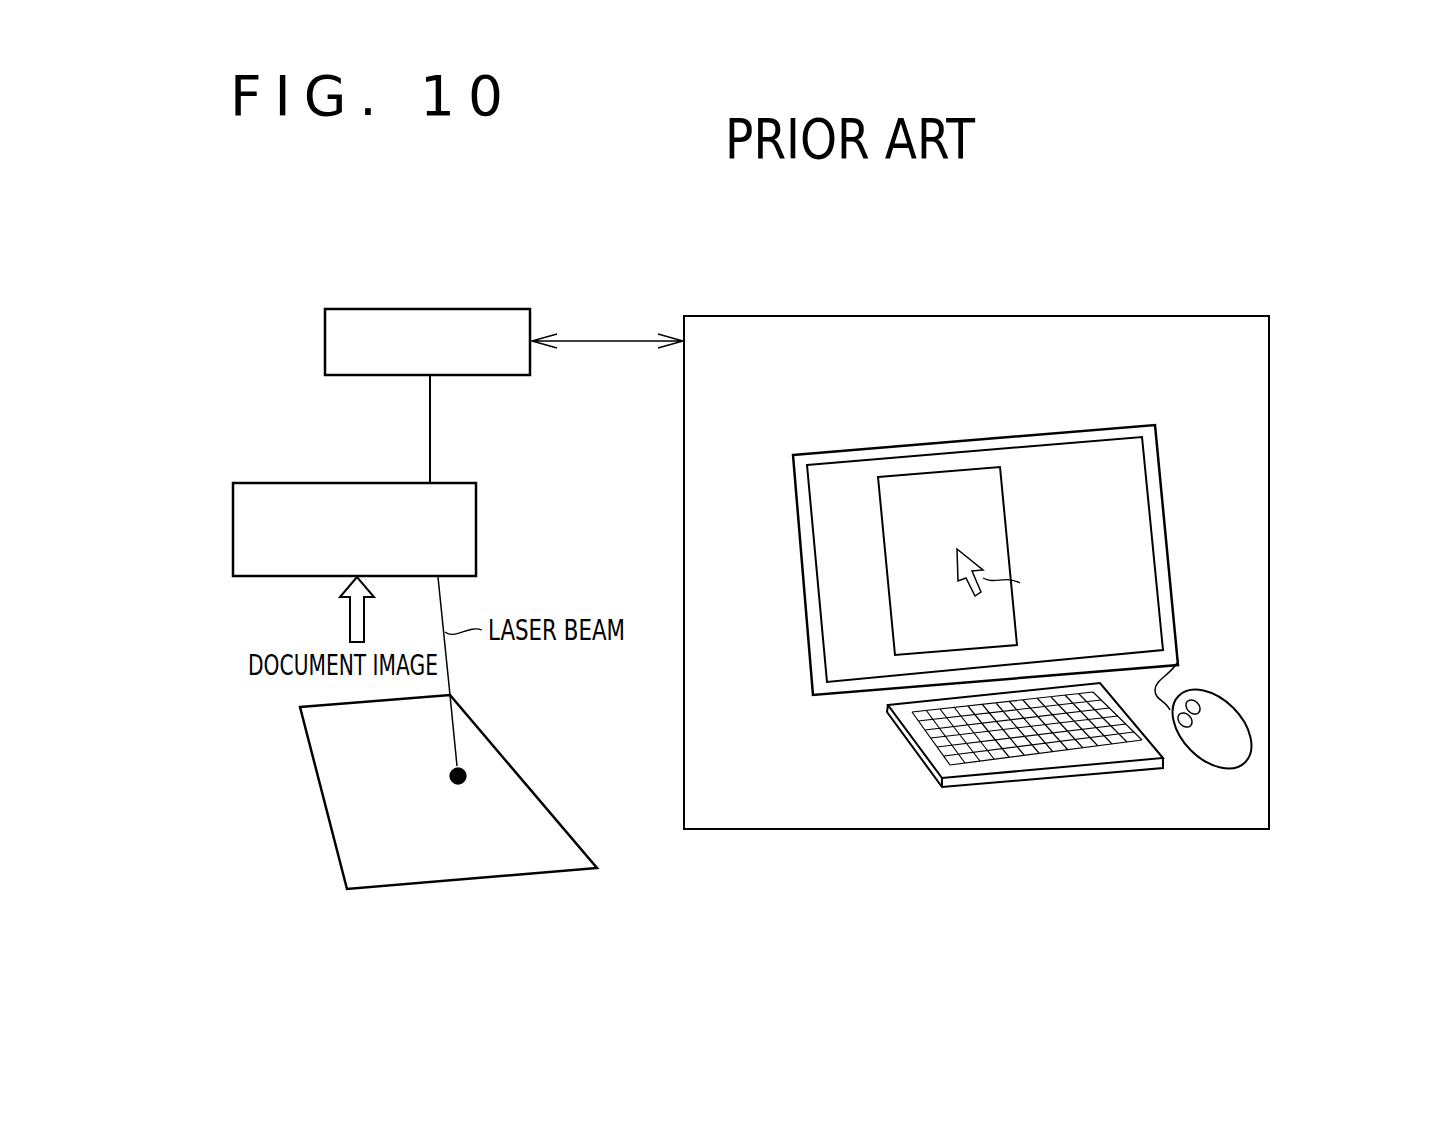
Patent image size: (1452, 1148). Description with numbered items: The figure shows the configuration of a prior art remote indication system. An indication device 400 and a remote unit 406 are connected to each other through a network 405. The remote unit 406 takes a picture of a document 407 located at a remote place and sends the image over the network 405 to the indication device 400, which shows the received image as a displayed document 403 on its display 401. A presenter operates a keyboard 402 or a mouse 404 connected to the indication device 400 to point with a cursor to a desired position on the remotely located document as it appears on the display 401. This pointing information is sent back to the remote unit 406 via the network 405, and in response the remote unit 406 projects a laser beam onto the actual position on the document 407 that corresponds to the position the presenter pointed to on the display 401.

The indication device 400 is at (757, 316).
The display 401 is at (1030, 465).
The keyboard 402 is at (970, 783).
The displayed document 403 is at (895, 483).
The mouse 404 is at (1237, 730).
The network 405 is at (430, 308).
The remote unit 406 is at (328, 482).
The document 407 is at (447, 868).